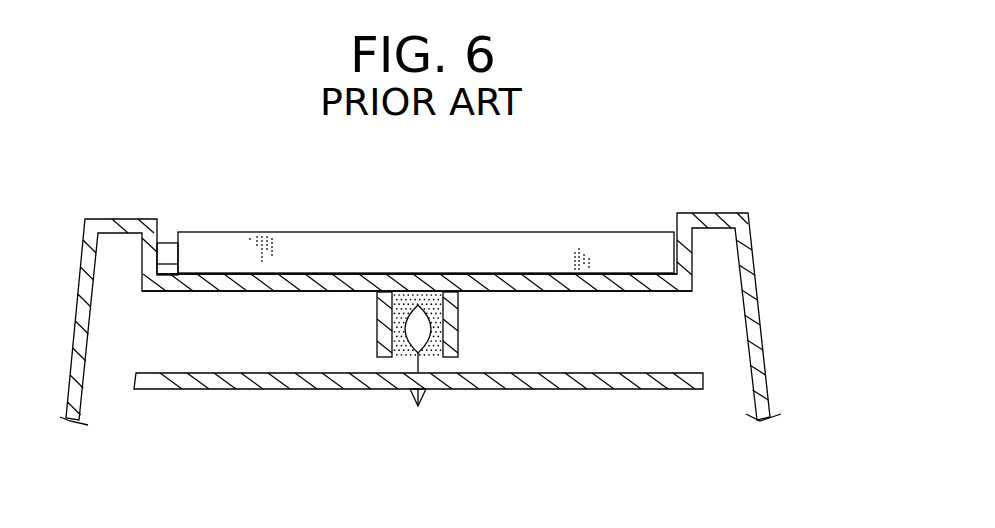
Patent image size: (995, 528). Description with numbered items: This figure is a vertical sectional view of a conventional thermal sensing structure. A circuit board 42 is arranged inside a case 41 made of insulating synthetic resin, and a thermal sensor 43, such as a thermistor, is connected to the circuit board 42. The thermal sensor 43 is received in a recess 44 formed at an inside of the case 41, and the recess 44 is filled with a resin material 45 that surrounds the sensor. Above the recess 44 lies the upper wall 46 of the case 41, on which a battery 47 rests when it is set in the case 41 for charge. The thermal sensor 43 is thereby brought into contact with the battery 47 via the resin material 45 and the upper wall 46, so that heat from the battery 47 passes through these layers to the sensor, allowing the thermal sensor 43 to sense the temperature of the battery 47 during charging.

The case 41 is at (764, 305).
The circuit board 42 is at (573, 378).
The thermal sensor 43 is at (418, 337).
The recess 44 is at (397, 318).
The resin material 45 is at (441, 327).
The upper wall 46 is at (517, 281).
The battery 47 is at (425, 245).